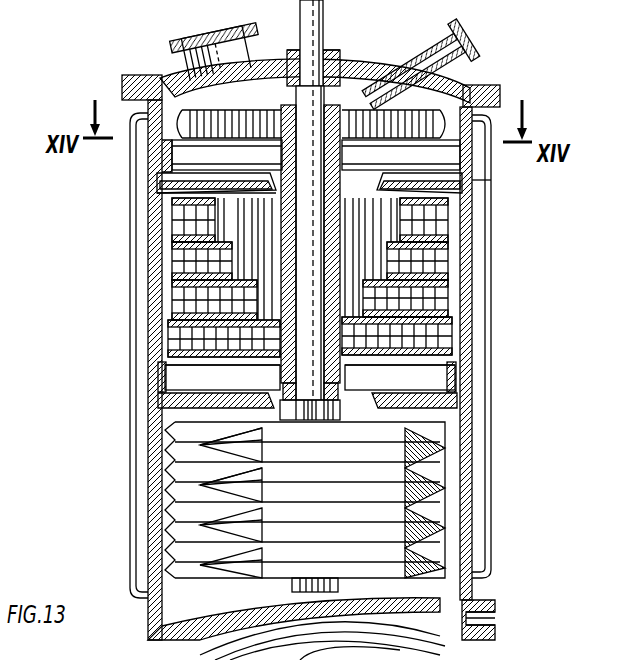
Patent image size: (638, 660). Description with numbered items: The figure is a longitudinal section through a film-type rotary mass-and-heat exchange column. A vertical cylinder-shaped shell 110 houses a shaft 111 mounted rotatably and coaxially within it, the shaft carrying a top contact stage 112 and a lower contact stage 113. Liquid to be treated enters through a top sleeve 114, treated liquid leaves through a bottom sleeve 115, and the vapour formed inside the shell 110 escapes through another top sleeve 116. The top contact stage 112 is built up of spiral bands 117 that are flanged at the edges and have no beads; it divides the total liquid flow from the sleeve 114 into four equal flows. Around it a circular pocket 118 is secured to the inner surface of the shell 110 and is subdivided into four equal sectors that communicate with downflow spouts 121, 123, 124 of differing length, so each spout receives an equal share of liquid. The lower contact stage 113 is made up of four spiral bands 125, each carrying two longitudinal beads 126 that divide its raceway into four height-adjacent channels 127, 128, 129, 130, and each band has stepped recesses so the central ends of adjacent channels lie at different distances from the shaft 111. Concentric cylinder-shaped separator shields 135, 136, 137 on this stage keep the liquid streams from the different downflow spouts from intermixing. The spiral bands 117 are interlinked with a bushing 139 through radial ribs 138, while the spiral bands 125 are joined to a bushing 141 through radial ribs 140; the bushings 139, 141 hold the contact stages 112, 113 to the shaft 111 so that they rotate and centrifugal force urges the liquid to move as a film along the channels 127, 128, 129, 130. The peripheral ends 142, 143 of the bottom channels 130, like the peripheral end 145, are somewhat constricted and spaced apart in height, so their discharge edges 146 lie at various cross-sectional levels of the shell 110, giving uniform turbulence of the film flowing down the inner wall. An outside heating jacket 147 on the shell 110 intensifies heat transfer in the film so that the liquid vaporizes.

The shell 110 is at (150, 434).
The shaft 111 is at (324, 42).
The top contact stage 112 is at (233, 112).
The contact stage 113 is at (168, 350).
The top sleeve 114 is at (478, 58).
The bottom sleeve 115 is at (497, 608).
The top sleeve 116 is at (165, 42).
The spiral bands 117 is at (172, 128).
The circular pocket 118 is at (165, 156).
The downflow spout 121 is at (476, 207).
The downflow spout 123 is at (165, 191).
The downflow spout 124 is at (200, 648).
The spiral bands 125 is at (165, 472).
The longitudinal beads 126 is at (452, 338).
The channel 127 is at (450, 222).
The channel 128 is at (450, 262).
The channel 129 is at (450, 300).
The bottom channel 130 is at (465, 350).
The separator shield 135 is at (230, 300).
The separator shield 136 is at (215, 262).
The separator shield 137 is at (200, 220).
The radial ribs 138 is at (416, 138).
The bushing 139 is at (342, 105).
The radial ribs 140 is at (456, 380).
The bushing 141 is at (283, 380).
The peripheral end 142 is at (430, 442).
The peripheral end 143 is at (228, 560).
The peripheral end 145 is at (400, 650).
The discharge edges 146 is at (198, 560).
The heating jacket 147 is at (490, 498).